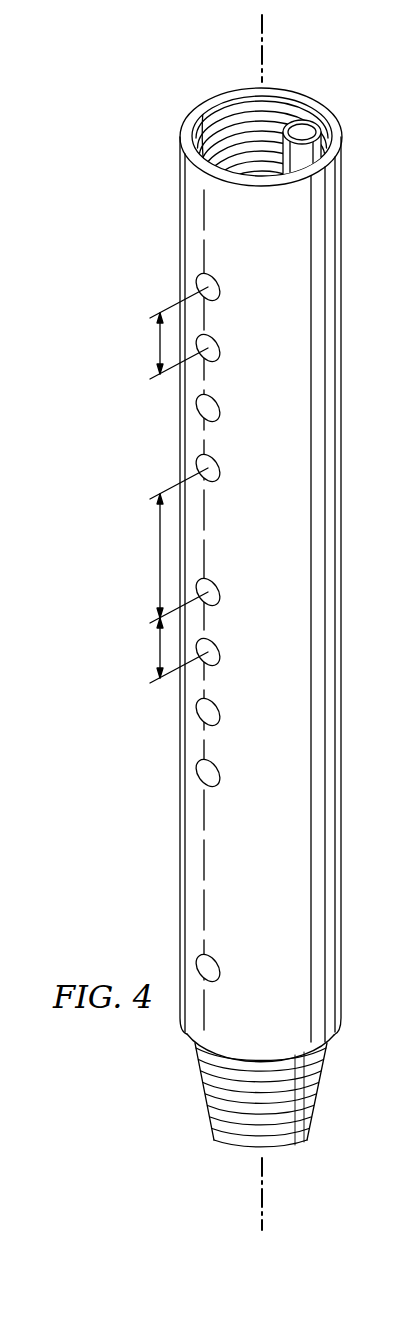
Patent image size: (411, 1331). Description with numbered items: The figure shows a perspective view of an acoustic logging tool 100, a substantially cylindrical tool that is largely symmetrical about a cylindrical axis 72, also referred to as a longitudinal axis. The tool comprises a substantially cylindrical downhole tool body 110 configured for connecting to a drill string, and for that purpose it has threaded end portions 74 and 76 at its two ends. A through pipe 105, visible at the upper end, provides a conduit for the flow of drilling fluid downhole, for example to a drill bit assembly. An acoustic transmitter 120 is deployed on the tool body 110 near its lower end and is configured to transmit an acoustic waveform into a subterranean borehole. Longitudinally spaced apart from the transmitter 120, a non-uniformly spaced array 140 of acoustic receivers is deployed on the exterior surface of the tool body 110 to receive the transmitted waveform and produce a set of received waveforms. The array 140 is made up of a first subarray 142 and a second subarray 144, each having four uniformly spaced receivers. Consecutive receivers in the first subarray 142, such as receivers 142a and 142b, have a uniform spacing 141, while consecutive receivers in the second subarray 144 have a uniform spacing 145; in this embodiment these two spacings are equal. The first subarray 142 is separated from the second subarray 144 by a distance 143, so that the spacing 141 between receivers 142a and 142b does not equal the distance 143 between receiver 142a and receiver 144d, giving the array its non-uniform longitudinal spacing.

The cylindrical axis 72 is at (263, 28).
The threaded end portion 74 is at (222, 108).
The threaded end portion 76 is at (196, 1095).
The acoustic logging tool 100 is at (100, 143).
The through pipe 105 is at (305, 127).
The downhole tool body 110 is at (179, 810).
The acoustic transmitter 120 is at (217, 960).
The non-uniformly spaced array of acoustic receivers 140 is at (164, 527).
The spacing 141 is at (158, 650).
The first subarray 142 is at (246, 669).
The receiver 142a is at (217, 580).
The receiver 142b is at (246, 636).
The distance 143 is at (158, 556).
The second subarray 144 is at (240, 399).
The receiver 144d is at (236, 489).
The spacing 145 is at (158, 347).